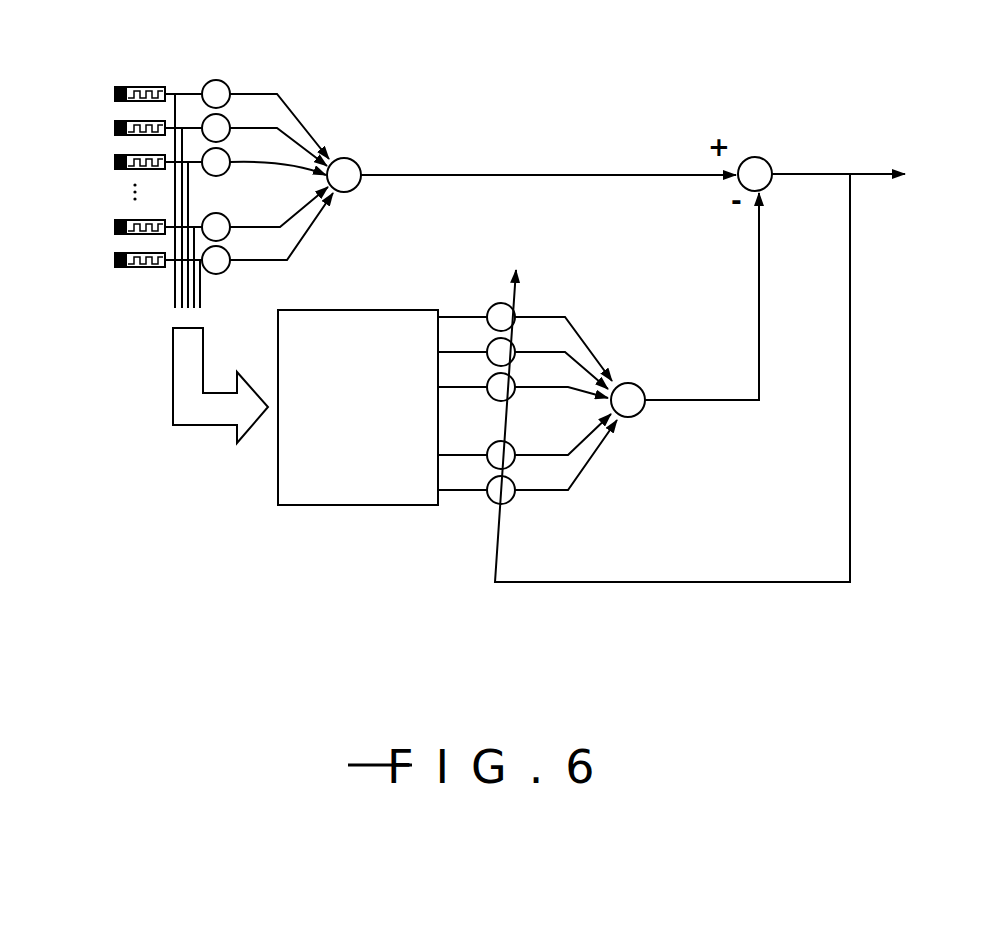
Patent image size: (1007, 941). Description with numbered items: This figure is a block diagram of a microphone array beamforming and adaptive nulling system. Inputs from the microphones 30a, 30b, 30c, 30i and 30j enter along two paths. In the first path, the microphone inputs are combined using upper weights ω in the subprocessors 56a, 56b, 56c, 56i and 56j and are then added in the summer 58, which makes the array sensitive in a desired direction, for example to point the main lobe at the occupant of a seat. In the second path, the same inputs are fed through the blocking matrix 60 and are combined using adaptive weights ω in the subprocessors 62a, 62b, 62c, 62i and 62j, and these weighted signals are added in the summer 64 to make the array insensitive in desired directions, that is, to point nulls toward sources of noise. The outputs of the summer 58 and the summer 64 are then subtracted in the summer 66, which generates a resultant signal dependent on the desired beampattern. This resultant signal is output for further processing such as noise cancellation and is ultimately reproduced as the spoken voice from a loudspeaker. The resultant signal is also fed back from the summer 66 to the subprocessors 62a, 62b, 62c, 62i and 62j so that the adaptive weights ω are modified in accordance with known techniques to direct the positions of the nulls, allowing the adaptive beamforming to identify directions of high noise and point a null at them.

The microphone 30a is at (116, 90).
The microphone 30b is at (116, 126).
The microphone 30c is at (116, 162).
The microphone 30i is at (117, 227).
The microphone 30j is at (117, 262).
The subprocessor 56a is at (227, 83).
The subprocessor 56b is at (228, 126).
The subprocessor 56c is at (230, 158).
The subprocessor 56i is at (229, 234).
The subprocessor 56j is at (218, 272).
The summer 58 is at (355, 158).
The blocking matrix 60 is at (338, 505).
The subprocessor 62a is at (515, 312).
The subprocessor 62b is at (515, 348).
The subprocessor 62c is at (513, 385).
The subprocessor 62i is at (518, 463).
The subprocessor 62j is at (512, 505).
The summer 64 is at (640, 413).
The summer 66 is at (767, 160).